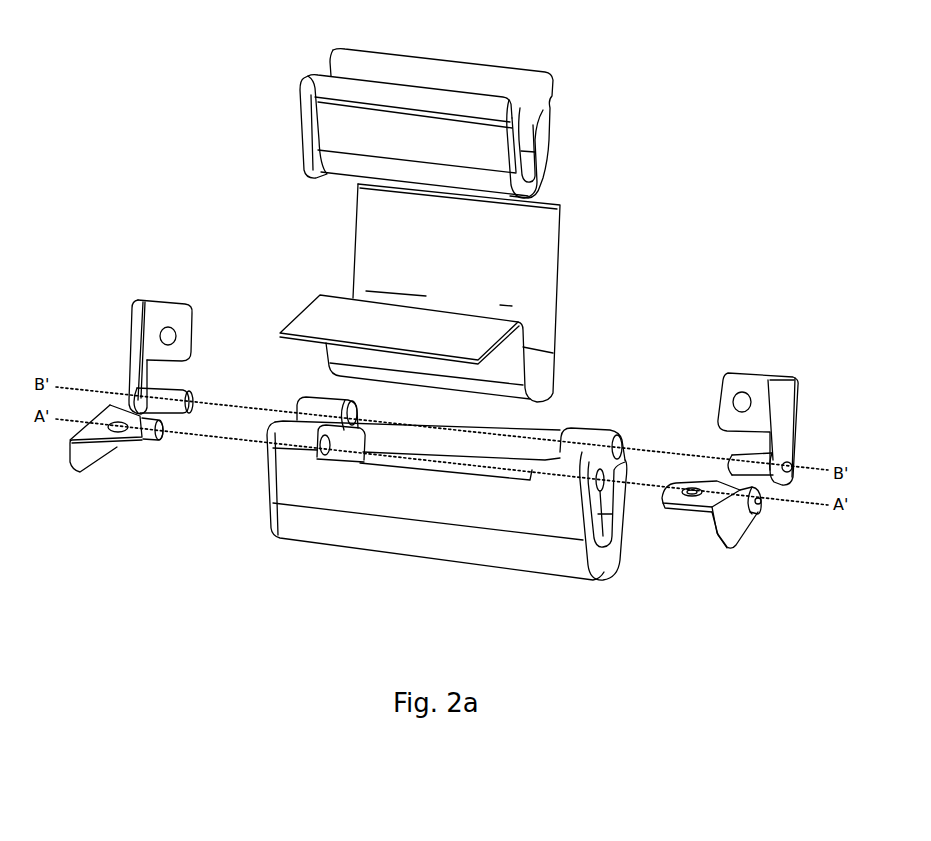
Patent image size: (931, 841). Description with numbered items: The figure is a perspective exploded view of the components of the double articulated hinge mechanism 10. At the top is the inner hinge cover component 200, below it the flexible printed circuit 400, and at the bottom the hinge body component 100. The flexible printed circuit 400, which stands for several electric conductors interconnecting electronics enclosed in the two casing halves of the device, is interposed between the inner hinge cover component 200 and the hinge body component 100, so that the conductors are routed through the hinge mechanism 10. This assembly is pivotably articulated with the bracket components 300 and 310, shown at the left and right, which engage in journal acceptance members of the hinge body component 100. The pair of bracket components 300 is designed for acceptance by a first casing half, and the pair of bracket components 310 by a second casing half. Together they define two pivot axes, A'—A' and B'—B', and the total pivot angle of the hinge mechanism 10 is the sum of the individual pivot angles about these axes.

The hinge mechanism 10 is at (248, 582).
The hinge body component 100 is at (431, 557).
The inner hinge cover component 200 is at (562, 129).
The bracket components 300 is at (163, 292).
The bracket components 310 is at (121, 456).
The flexible printed circuit 400 is at (567, 273).